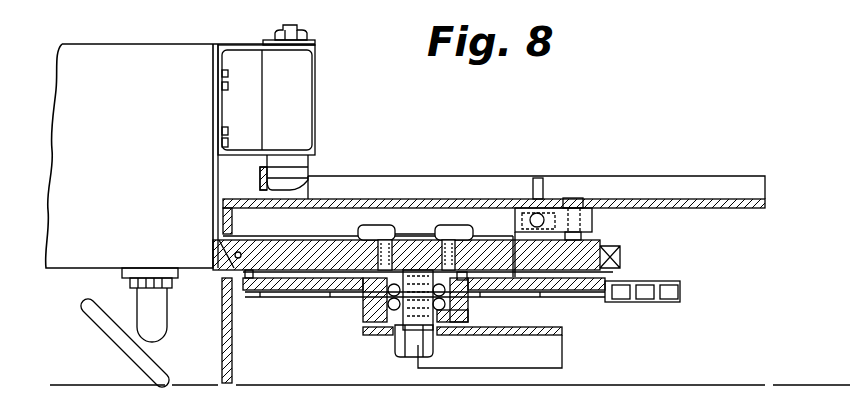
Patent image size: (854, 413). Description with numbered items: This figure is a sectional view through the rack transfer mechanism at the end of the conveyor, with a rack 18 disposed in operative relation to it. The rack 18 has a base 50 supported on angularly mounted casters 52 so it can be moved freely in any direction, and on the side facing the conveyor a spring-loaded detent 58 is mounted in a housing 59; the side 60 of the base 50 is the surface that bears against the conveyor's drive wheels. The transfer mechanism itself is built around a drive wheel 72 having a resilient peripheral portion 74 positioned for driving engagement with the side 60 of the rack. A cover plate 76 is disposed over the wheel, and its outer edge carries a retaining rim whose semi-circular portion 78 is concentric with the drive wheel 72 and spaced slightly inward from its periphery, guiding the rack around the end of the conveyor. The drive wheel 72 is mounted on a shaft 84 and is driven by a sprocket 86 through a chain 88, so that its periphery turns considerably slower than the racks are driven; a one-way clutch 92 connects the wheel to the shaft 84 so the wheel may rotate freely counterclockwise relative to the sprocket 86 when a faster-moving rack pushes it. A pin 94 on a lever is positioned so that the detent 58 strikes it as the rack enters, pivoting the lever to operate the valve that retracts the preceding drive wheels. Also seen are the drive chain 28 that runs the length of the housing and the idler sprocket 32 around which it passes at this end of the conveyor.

The rack 18 is at (136, 168).
The base 50 is at (142, 46).
The casters 52 is at (112, 352).
The spring-loaded detent 58 is at (308, 181).
The housing 59 is at (316, 62).
The side 60 is at (213, 232).
The drive wheel 72 is at (585, 247).
The resilient peripheral portion 74 is at (218, 268).
The cover plate 76 is at (402, 199).
The semi-circular portion 78 is at (336, 176).
The shaft 84 is at (397, 326).
The sprocket 86 is at (272, 290).
The chain 88 is at (676, 300).
The one-way clutch 92 is at (440, 258).
The pin 94 is at (545, 183).
The drive chain 28 is at (645, 303).
The idler sprocket 32 is at (590, 292).